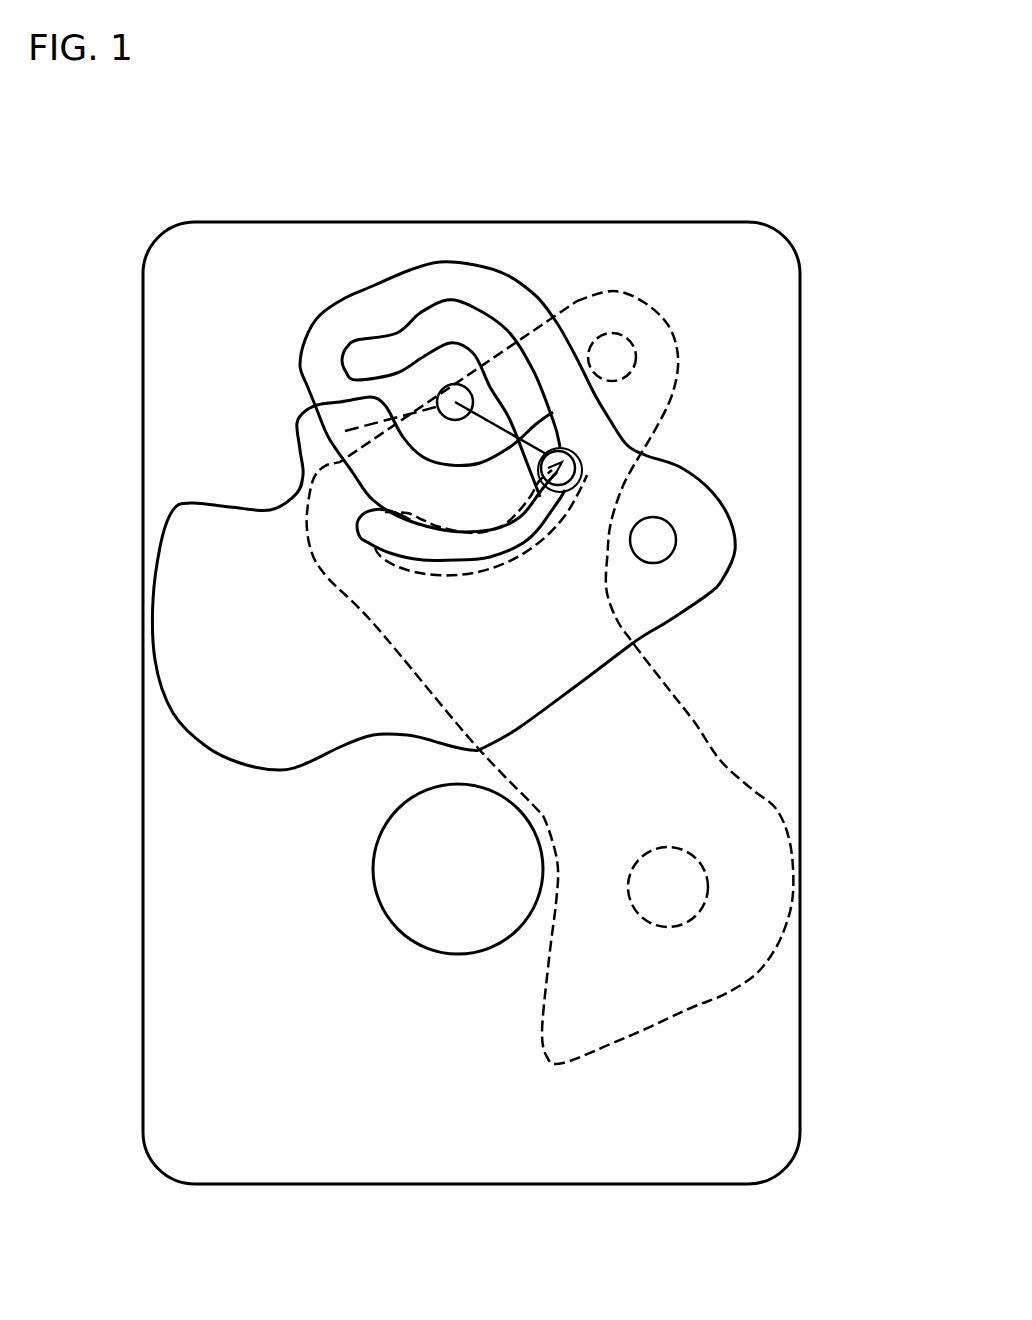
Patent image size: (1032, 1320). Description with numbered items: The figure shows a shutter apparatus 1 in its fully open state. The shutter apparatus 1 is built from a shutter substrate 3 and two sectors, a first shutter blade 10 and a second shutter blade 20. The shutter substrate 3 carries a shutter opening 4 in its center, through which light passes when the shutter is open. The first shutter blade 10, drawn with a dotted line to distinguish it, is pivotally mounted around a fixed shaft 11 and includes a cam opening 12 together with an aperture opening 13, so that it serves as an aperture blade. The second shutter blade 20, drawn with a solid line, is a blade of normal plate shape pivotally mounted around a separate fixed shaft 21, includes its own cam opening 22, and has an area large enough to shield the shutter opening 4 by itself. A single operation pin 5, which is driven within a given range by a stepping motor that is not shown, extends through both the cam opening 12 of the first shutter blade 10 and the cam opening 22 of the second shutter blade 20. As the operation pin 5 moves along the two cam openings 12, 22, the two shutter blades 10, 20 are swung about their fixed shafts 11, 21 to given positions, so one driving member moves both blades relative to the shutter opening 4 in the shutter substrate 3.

The shutter apparatus 1 is at (582, 163).
The shutter substrate 3 is at (770, 663).
The shutter opening 4 is at (403, 927).
The operation pin 5 is at (557, 490).
The first shutter blade 10 is at (753, 790).
The fixed shaft 11 is at (618, 357).
The cam opening 12 is at (493, 563).
The aperture opening 13 is at (680, 923).
The second shutter blade 20 is at (257, 543).
The fixed shaft 21 is at (658, 540).
The cam opening 22 is at (410, 343).